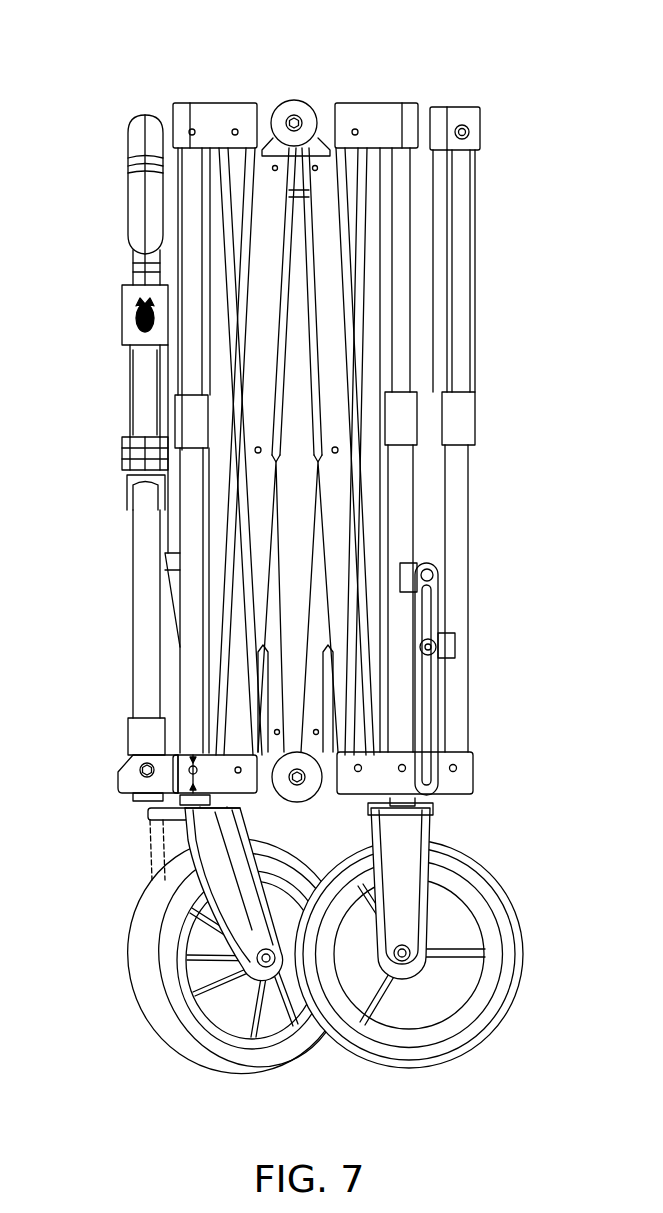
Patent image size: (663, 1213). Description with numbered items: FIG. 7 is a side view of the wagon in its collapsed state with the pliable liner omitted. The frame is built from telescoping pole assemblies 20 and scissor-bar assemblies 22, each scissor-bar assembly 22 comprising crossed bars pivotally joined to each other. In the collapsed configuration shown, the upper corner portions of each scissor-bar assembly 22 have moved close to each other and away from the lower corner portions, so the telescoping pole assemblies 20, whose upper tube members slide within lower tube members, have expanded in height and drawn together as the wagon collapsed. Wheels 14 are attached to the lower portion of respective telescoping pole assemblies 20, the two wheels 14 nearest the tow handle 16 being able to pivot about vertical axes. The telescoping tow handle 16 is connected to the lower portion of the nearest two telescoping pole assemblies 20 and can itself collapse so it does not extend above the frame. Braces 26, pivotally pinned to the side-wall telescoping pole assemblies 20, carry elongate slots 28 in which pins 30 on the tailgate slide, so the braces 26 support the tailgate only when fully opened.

The wheels 14 is at (158, 920).
The tow handle 16 is at (143, 393).
The telescoping pole assemblies 20 is at (187, 255).
The scissor-bar assemblies 22 is at (317, 195).
The braces 26 is at (437, 697).
The elongate slots 28 is at (428, 767).
The pins 30 is at (435, 648).